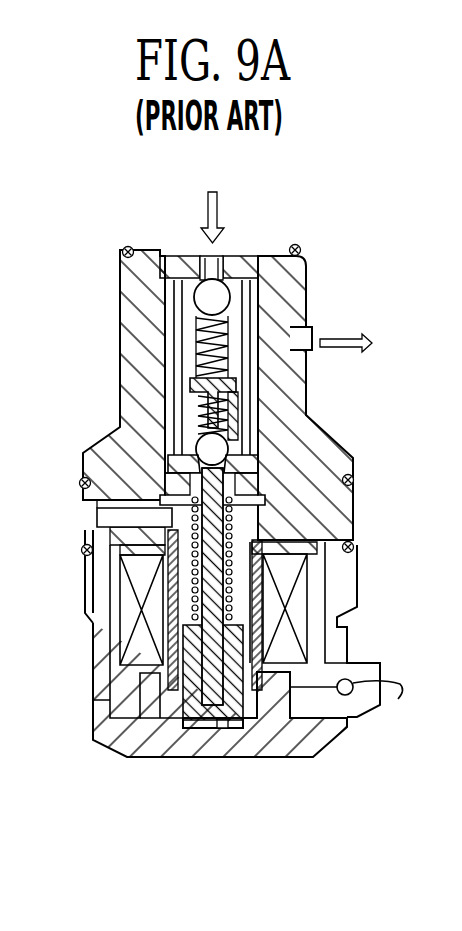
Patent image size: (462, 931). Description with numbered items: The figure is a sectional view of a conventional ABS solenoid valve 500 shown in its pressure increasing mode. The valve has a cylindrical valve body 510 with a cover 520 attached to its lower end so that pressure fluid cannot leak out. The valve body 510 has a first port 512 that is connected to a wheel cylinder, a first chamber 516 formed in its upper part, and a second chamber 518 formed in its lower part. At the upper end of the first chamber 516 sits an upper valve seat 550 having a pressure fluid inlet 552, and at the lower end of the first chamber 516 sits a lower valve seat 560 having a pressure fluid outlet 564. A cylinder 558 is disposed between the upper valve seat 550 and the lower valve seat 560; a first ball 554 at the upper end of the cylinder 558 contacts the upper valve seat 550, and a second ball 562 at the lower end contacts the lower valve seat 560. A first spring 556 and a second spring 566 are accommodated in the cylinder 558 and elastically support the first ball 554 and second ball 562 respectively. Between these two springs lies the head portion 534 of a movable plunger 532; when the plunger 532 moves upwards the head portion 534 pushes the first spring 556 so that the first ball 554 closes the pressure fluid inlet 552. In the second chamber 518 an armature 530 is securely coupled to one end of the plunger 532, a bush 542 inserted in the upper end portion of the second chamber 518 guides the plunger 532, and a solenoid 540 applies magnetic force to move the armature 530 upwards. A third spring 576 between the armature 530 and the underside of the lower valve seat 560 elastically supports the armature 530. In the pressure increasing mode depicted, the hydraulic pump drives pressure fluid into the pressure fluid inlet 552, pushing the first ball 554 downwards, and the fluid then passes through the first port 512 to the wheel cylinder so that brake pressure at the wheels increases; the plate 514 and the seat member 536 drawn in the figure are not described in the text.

The solenoid valve 500 is at (176, 198).
The cylindrical valve body 510 is at (290, 282).
The first port 512 is at (292, 334).
The flux plate 514 is at (100, 515).
The first chamber 516 is at (302, 257).
The second chamber 518 is at (245, 622).
The cover 520 is at (144, 750).
The armature 530 is at (233, 706).
The movable plunger 532 is at (200, 612).
The head portion 534 is at (205, 386).
The valve seat member 536 is at (262, 468).
The solenoid 540 is at (160, 665).
The bush 542 is at (135, 599).
The upper valve seat 550 is at (239, 258).
The pressure fluid inlet 552 is at (207, 260).
The first ball 554 is at (123, 256).
The first spring 556 is at (203, 297).
The cylinder 558 is at (205, 346).
The lower valve seat 560 is at (198, 452).
The second ball 562 is at (200, 420).
The pressure fluid outlet 564 is at (240, 470).
The second spring 566 is at (258, 386).
The third spring 576 is at (170, 583).